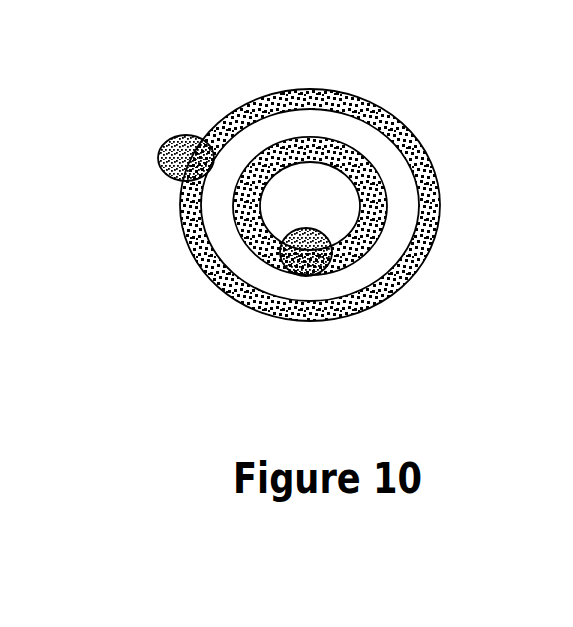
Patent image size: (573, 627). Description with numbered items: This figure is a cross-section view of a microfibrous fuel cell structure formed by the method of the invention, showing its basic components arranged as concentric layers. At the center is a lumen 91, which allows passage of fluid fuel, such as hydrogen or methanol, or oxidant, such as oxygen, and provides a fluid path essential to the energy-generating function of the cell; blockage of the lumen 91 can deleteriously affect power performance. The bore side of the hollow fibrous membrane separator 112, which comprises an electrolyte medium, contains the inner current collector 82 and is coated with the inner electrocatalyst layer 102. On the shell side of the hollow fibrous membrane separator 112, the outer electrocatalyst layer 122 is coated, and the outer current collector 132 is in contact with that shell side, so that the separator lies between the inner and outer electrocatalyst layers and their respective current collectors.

The inner current collector 82 is at (303, 255).
The lumen 91 is at (301, 198).
The inner electrocatalyst layer 102 is at (352, 250).
The hollow fibrous membrane separator 112 is at (303, 118).
The outer electrocatalyst layer 122 is at (253, 107).
The outer current collector 132 is at (185, 155).